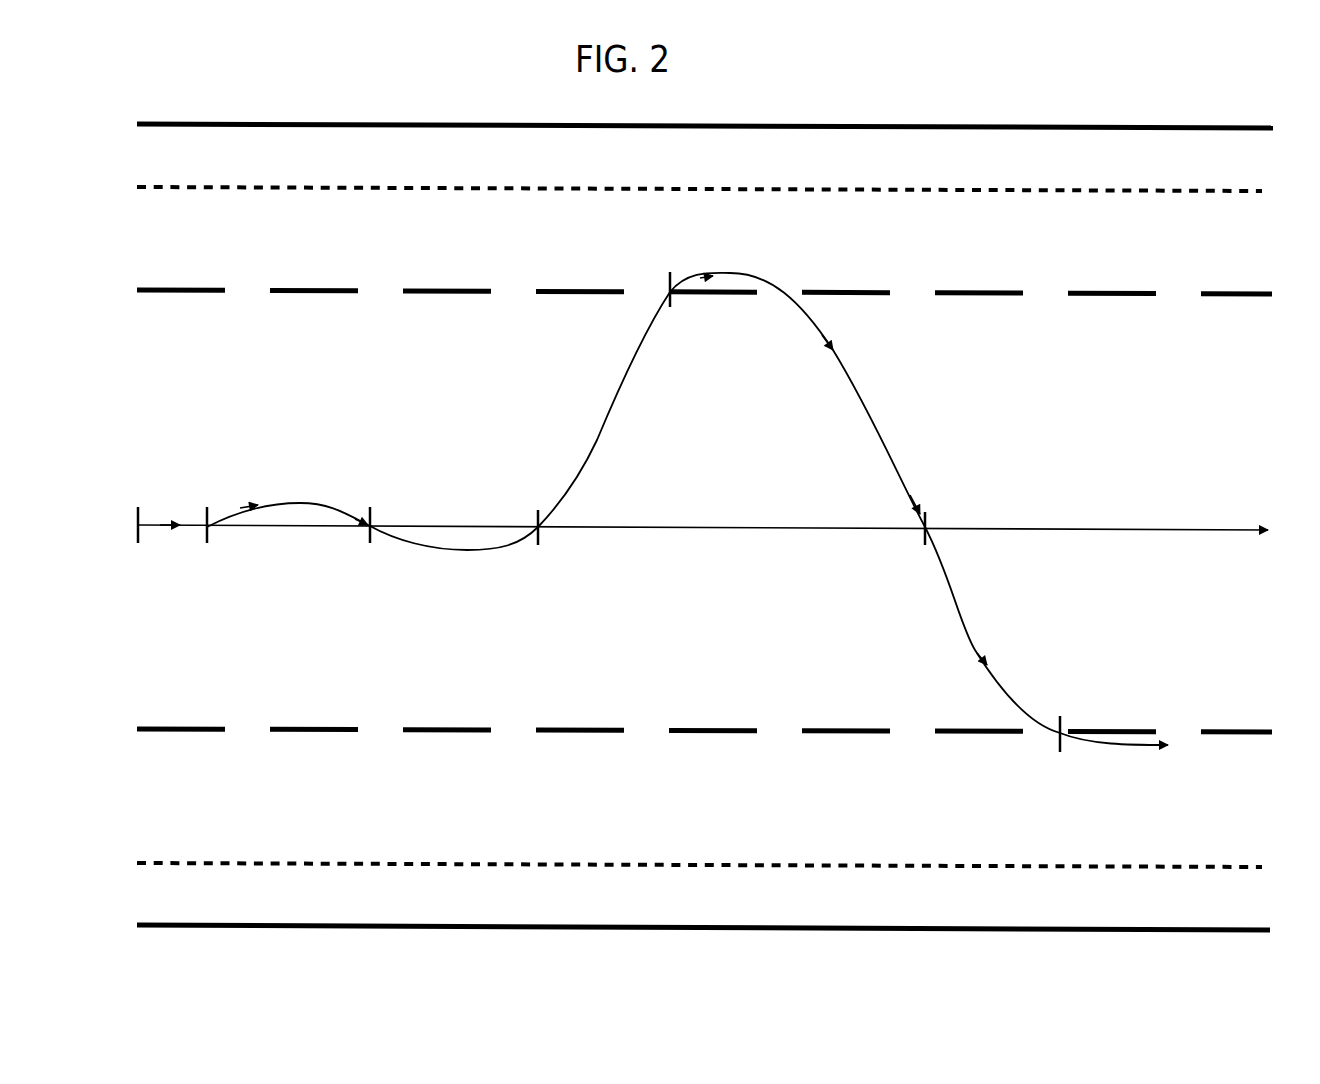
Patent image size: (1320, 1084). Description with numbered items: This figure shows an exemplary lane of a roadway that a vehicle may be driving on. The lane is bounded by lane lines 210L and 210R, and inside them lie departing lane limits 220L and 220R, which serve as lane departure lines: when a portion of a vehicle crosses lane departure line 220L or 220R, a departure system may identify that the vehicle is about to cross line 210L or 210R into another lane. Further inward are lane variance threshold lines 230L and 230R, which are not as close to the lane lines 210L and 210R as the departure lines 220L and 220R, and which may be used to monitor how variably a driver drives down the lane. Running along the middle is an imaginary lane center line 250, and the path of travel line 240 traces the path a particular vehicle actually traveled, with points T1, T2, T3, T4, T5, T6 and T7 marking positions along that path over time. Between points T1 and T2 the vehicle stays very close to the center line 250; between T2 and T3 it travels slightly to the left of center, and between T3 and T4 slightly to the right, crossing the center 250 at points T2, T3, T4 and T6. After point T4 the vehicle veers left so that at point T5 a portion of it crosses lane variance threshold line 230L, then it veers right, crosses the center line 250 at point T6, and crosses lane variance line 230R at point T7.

The lane line 210L is at (250, 124).
The departing lane limit 220L is at (275, 187).
The lane variance threshold line 230L is at (335, 290).
The lane variance threshold line 230R is at (305, 731).
The departing lane limit 220R is at (290, 866).
The lane line 210R is at (250, 927).
The path of travel line 240 is at (597, 442).
The imaginary lane center line 250 is at (838, 527).
The point T1 is at (141, 541).
The point T2 is at (205, 541).
The point T3 is at (373, 547).
The point T4 is at (537, 546).
The point T5 is at (671, 274).
The point T6 is at (946, 514).
The point T7 is at (1053, 719).